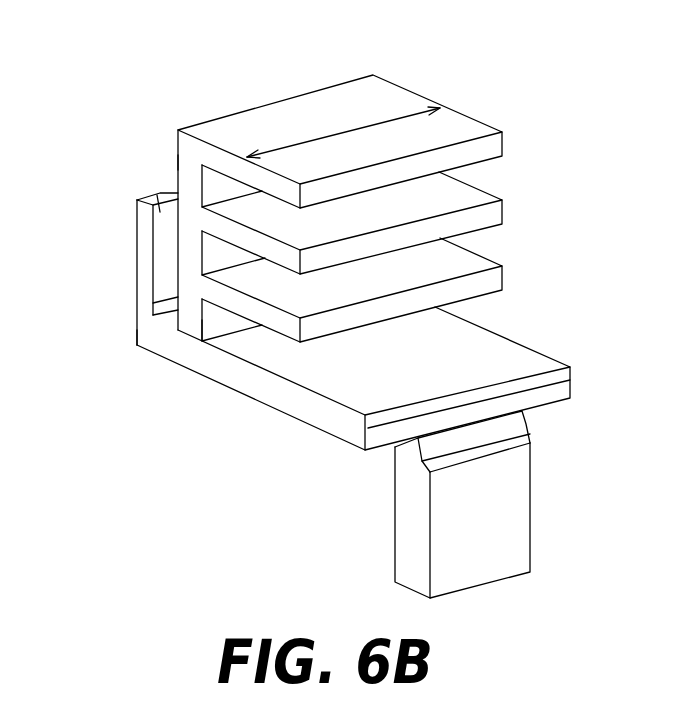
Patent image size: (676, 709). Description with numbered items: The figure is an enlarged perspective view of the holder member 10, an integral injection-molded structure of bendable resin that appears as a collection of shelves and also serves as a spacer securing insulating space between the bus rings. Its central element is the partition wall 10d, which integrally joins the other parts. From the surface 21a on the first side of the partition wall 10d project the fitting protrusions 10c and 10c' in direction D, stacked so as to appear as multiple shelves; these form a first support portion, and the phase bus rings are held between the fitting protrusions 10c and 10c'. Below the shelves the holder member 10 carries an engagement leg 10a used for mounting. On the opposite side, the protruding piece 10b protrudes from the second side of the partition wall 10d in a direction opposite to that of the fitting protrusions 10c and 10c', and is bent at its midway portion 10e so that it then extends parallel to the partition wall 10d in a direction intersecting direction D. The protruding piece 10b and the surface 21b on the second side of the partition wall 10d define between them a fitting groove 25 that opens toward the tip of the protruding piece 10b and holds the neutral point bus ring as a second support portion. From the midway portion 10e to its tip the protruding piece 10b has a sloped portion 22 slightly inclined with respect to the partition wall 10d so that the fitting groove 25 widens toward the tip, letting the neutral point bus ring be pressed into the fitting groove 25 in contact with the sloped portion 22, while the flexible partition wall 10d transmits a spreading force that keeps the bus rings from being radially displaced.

The holder member 10 is at (312, 92).
The engagement leg 10a is at (503, 543).
The protruding piece 10b is at (138, 247).
The fitting protrusion 10c is at (384, 208).
The fitting protrusion 10c' is at (384, 378).
The partition wall 10d is at (187, 158).
The midway portion 10e is at (146, 332).
The surface on the first side of the partition wall 21a is at (217, 338).
The surface on the second side of the partition wall 21b is at (176, 162).
The sloped portion 22 is at (162, 215).
The fitting groove 25 is at (155, 307).
The direction D is at (343, 132).